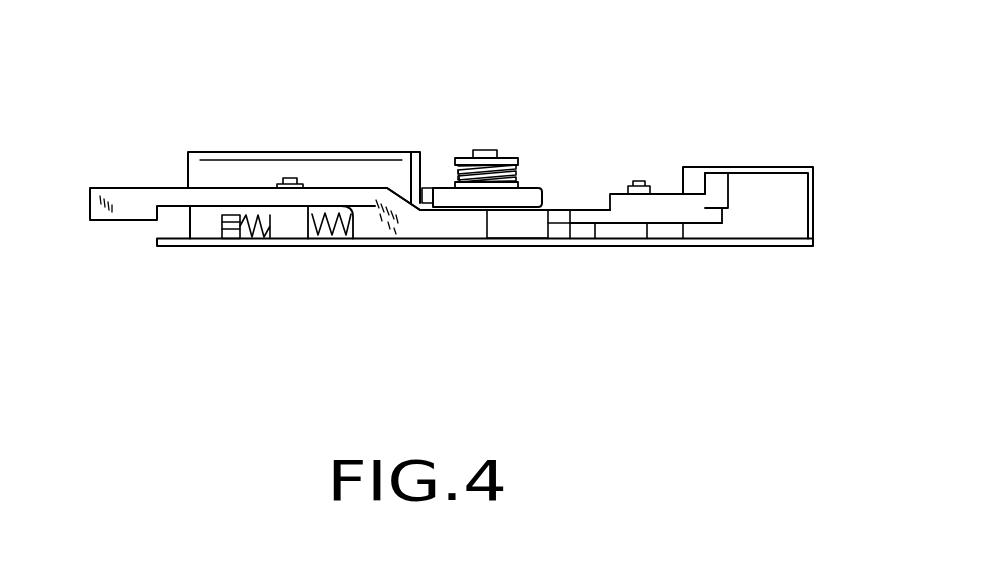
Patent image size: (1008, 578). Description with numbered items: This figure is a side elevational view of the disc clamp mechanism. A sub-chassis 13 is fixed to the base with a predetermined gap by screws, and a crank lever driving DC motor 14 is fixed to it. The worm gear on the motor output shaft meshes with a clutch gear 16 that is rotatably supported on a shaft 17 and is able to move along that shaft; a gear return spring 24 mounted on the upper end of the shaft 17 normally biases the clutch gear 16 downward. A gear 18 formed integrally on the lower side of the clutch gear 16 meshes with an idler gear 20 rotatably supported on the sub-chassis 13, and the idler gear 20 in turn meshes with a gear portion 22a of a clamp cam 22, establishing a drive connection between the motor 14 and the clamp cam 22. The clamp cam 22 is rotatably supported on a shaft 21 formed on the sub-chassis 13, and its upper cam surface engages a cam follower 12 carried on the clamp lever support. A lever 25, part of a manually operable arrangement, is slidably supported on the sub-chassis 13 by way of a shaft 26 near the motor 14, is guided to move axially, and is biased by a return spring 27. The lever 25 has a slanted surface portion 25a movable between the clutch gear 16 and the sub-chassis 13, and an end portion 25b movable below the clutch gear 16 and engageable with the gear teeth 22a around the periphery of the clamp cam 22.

The cam follower 12 is at (718, 182).
The sub-chassis 13 is at (782, 240).
The crank lever driving DC motor 14 is at (258, 162).
The clutch gear 16 is at (465, 198).
The shaft 17 is at (485, 150).
The gear 18 is at (510, 208).
The idler gear 20 is at (557, 217).
The shaft 21 is at (638, 183).
The clamp cam 22 is at (677, 195).
The gear portion 22a is at (652, 232).
The gear return spring 24 is at (503, 162).
The lever 25 is at (122, 212).
The slanted surface portion 25a is at (402, 190).
The end portion 25b is at (538, 228).
The shaft 26 is at (280, 188).
The return spring 27 is at (320, 238).